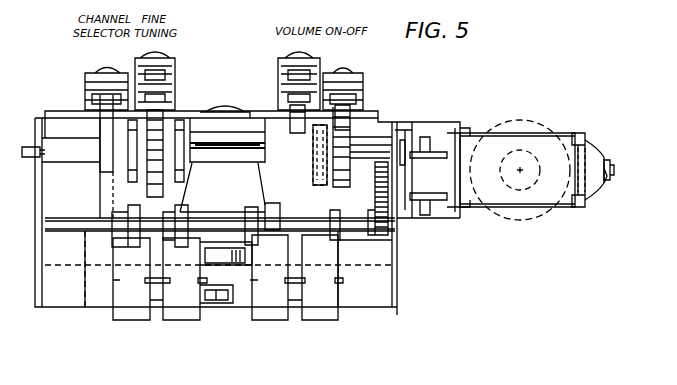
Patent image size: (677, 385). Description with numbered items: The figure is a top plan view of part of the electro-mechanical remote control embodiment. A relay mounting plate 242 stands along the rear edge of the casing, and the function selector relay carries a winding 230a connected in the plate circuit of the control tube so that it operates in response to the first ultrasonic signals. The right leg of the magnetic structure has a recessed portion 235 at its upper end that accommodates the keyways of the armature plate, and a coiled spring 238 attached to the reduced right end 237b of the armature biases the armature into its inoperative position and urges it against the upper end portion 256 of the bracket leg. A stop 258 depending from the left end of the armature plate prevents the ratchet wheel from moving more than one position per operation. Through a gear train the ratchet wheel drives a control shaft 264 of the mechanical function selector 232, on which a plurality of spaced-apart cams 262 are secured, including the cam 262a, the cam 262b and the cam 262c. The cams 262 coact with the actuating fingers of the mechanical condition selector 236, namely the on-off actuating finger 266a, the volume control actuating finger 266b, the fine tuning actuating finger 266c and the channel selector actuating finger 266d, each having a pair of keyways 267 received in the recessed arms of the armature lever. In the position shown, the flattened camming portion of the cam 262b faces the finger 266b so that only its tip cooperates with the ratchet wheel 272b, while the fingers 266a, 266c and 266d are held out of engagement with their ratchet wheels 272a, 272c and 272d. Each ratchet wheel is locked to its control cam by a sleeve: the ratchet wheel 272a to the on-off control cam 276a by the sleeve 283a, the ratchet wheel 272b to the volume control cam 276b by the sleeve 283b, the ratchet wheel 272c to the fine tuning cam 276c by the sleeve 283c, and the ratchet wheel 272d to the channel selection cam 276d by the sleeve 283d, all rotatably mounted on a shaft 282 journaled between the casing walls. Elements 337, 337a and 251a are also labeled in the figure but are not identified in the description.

The mechanical function selector 232 is at (33, 258).
The mechanical condition selector 236 is at (107, 320).
The shaft 282 is at (27, 146).
The control shaft 264 is at (112, 205).
The ratchet wheel 272d is at (128, 145).
The sleeve 283d is at (128, 164).
The control cams 262 is at (133, 242).
The channel selection control cam 276d is at (103, 123).
The fine tuning control cam 276c is at (158, 112).
The ratchet wheel 272c is at (180, 123).
The sleeve 283b is at (262, 142).
The sleeve 283c is at (262, 147).
The cam 262c is at (190, 212).
The cam 262b is at (178, 223).
The volume control cam 276b is at (298, 116).
The ratchet wheel 272b is at (272, 114).
The ratchet wheel 272a is at (317, 100).
The on-off control cam 276a is at (357, 123).
The sleeve 283a is at (327, 150).
The cam 262a is at (320, 243).
The relay mounting plate 242 is at (413, 128).
The upper end portion 256 is at (452, 157).
The stop 258 is at (409, 218).
The recessed portion 235 is at (462, 128).
The winding 230a is at (517, 213).
The motor casing 337 is at (500, 143).
The motor shaft 337a is at (587, 133).
The cone 251a is at (606, 192).
The reduced right end 237b is at (611, 168).
The coiled spring 238 is at (609, 177).
The channel selector actuating finger 266d is at (124, 315).
The fine tuning actuating finger 266c is at (185, 315).
The volume control actuating finger 266b is at (258, 315).
The on-off actuating finger 266a is at (322, 315).
The keyways 267 is at (318, 283).